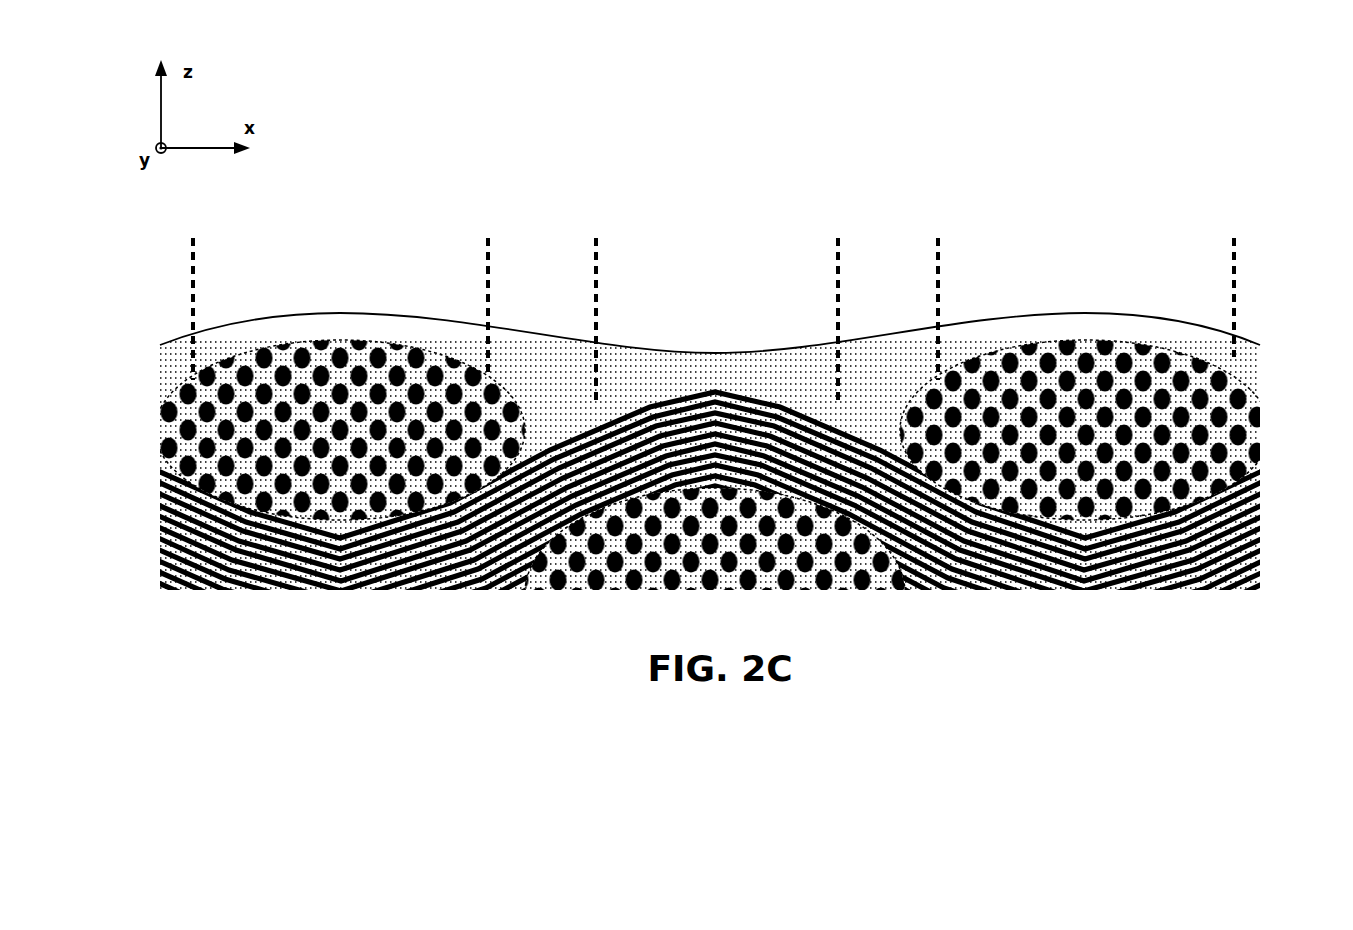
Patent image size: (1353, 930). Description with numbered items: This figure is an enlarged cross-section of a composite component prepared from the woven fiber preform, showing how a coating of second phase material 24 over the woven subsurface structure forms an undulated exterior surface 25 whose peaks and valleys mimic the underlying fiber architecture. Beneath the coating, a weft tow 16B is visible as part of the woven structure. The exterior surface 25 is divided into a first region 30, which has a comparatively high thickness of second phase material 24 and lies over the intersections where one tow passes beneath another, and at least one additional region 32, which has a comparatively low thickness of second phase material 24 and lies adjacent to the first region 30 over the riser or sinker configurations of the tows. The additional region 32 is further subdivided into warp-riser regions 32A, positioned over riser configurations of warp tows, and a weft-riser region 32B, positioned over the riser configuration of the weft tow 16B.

The additional region 32 is at (712, 376).
The warp-riser region 32A is at (712, 382).
The weft-riser region 32B is at (596, 238).
The first region 30 is at (488, 238).
The exterior surface 25 is at (444, 306).
The second phase material 24 is at (715, 427).
The weft tow 16B is at (671, 362).